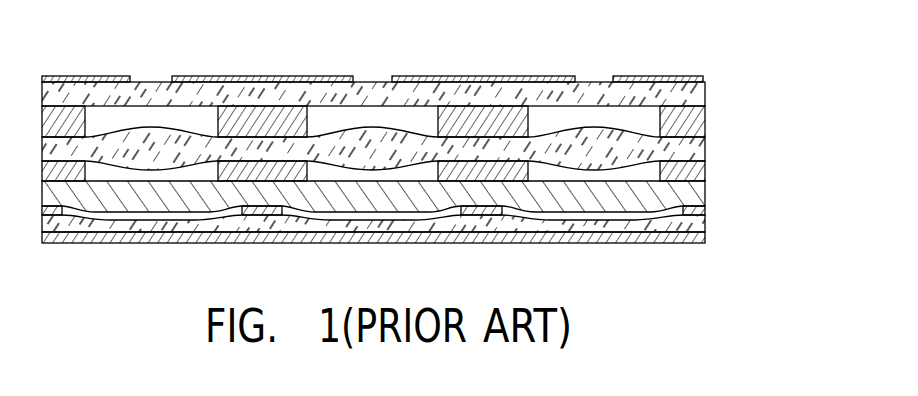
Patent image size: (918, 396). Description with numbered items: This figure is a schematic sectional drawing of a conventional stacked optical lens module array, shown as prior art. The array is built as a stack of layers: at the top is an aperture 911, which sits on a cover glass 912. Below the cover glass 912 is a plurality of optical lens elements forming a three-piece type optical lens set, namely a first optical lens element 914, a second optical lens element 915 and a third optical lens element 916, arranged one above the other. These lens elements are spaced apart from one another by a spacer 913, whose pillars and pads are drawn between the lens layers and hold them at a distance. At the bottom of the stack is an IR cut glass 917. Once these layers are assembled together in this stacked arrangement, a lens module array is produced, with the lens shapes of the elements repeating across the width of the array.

The aperture 911 is at (675, 77).
The cover glass 912 is at (688, 96).
The spacer 913 is at (688, 124).
The first optical lens element 914 is at (688, 152).
The second optical lens element 915 is at (690, 198).
The third optical lens element 916 is at (688, 225).
The IR cut glass 917 is at (680, 245).